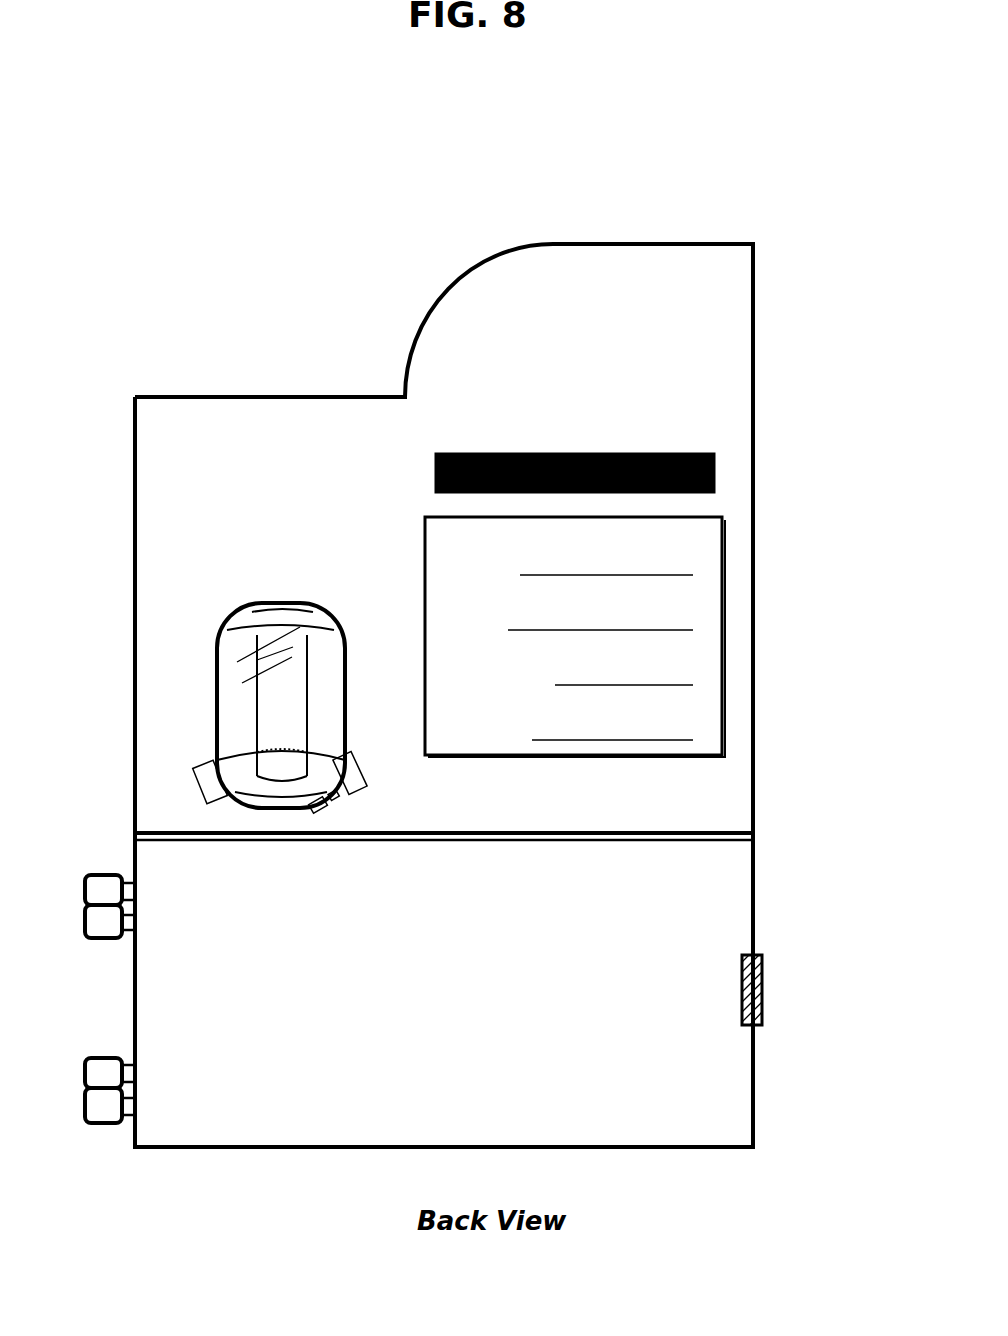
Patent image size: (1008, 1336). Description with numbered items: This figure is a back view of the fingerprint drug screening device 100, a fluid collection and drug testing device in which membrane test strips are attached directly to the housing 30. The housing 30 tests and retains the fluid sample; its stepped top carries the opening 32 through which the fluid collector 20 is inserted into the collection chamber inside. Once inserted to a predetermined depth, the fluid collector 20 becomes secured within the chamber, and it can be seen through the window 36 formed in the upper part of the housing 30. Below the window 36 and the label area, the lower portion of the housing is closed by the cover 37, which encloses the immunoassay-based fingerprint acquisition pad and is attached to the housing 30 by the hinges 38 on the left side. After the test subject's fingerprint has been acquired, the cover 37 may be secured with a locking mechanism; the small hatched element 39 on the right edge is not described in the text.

The fingerprint drug screening device 100 is at (417, 166).
The housing 30 is at (447, 302).
The opening 32 is at (278, 397).
The window 36 is at (227, 628).
The fluid collector 20 is at (261, 751).
The cover 37 is at (710, 900).
The hinges 38 is at (110, 1052).
The switch 39 is at (762, 985).